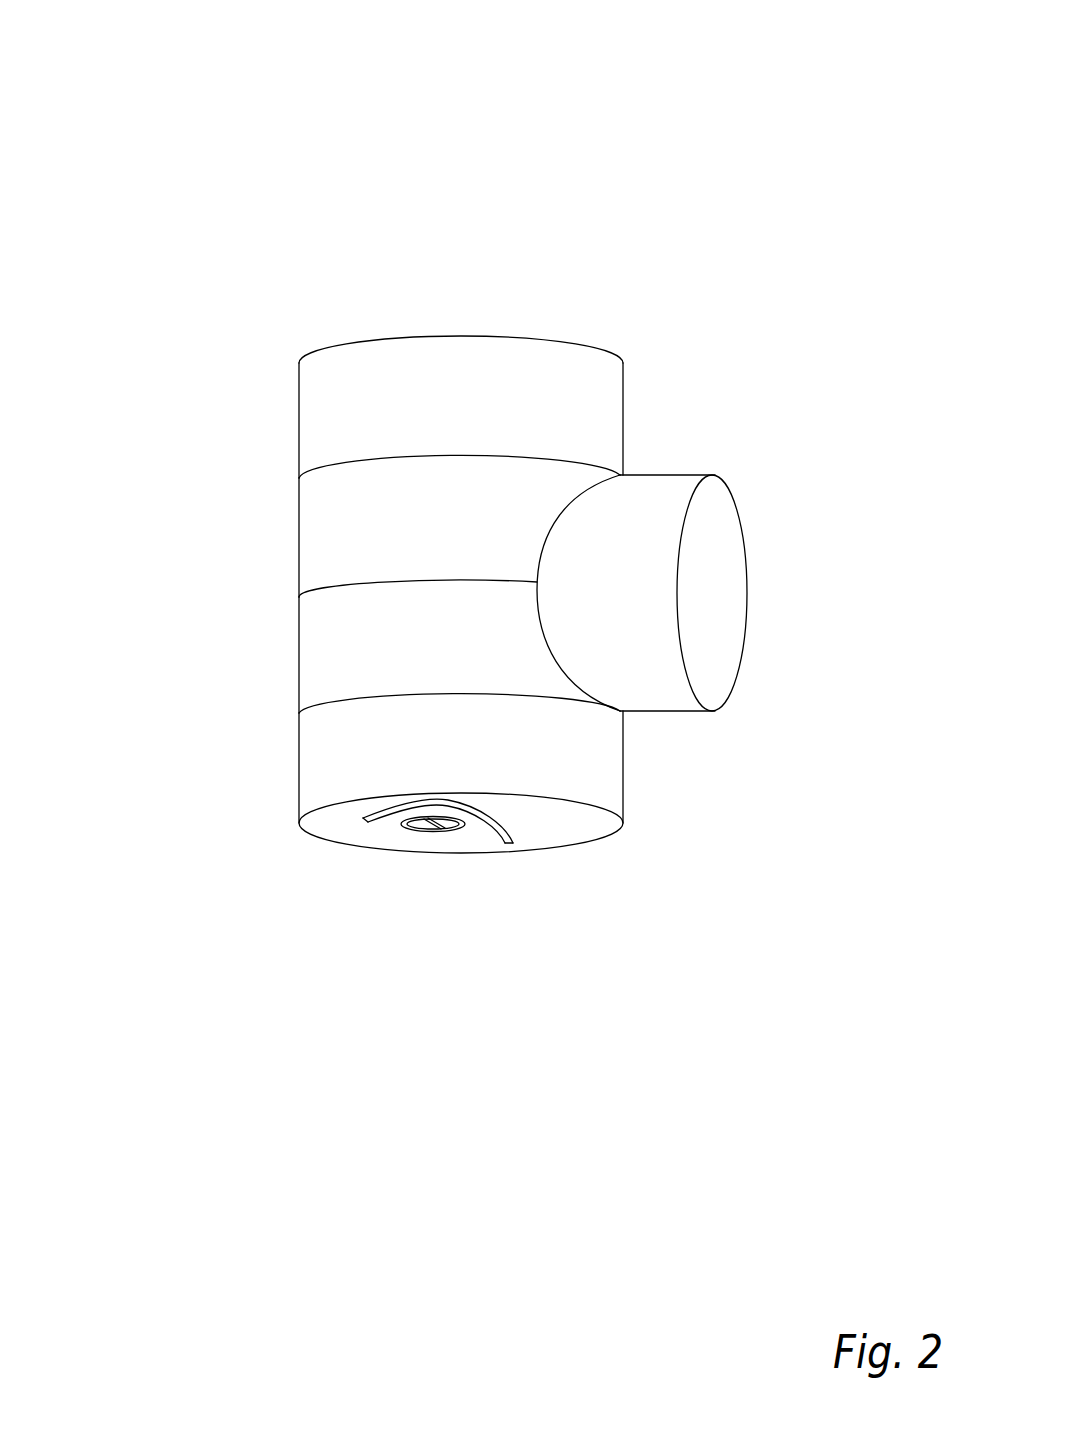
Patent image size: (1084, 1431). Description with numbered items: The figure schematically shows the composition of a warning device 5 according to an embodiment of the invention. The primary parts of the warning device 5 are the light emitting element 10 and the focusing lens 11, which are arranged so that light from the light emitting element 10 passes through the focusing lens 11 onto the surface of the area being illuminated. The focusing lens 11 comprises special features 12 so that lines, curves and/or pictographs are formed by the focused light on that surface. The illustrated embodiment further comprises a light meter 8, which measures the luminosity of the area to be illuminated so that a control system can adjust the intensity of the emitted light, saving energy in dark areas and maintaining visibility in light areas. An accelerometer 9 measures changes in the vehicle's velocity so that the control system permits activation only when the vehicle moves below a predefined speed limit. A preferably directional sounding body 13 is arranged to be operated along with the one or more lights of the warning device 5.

The warning device 5 is at (175, 190).
The light meter 8 is at (325, 423).
The accelerometer 9 is at (343, 547).
The light emitting element 10 is at (332, 652).
The focusing lens 11 is at (338, 773).
The special features 12 is at (438, 826).
The directional sounding body 13 is at (713, 572).